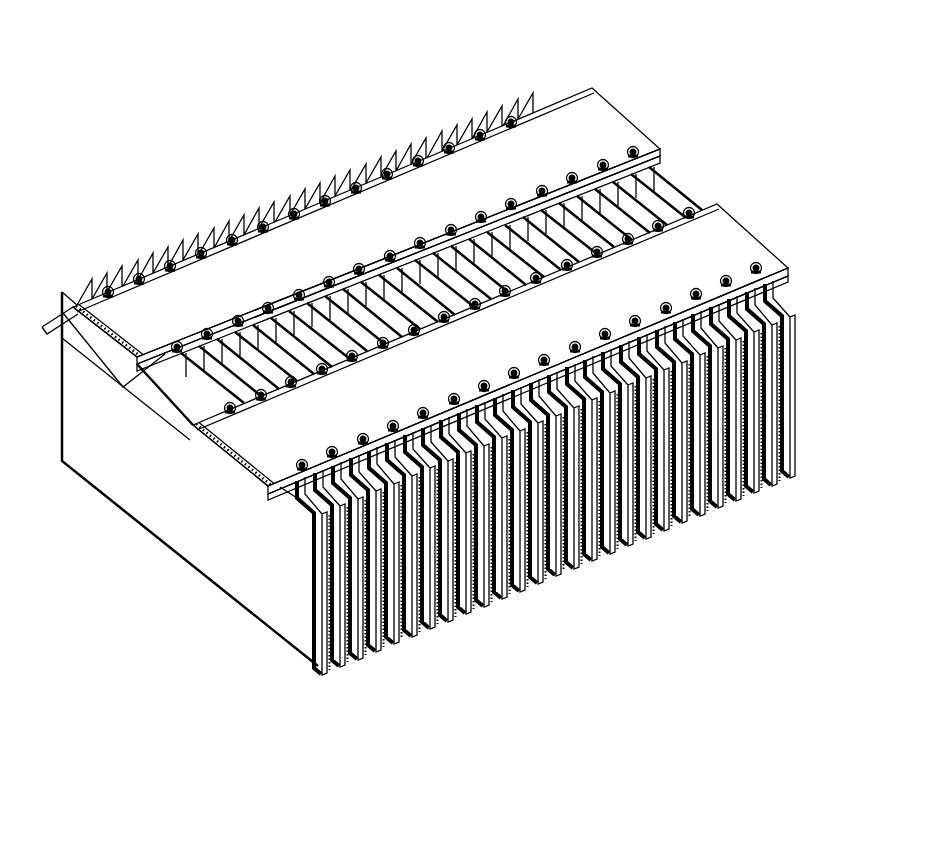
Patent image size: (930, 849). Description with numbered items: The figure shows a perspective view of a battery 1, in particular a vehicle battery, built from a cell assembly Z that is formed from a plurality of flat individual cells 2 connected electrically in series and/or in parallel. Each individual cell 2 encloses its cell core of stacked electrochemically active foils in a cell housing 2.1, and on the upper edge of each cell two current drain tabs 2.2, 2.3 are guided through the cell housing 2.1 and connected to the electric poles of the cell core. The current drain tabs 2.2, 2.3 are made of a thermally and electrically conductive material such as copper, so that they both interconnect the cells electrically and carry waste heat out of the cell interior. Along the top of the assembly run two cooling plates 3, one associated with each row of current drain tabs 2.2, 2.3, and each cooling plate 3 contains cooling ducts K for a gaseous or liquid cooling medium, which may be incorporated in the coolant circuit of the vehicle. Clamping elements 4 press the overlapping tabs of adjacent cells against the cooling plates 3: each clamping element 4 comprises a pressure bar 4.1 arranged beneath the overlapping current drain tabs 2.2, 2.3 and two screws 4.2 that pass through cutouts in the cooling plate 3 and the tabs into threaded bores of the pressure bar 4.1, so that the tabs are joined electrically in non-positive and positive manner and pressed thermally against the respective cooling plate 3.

The battery 1 is at (184, 68).
The individual cell 2 is at (120, 481).
The cell housing 2.1 is at (197, 540).
The current drain tab 2.2 is at (773, 277).
The current drain tab 2.3 is at (670, 153).
The cooling plate 3 is at (580, 107).
The clamping element 4 is at (102, 277).
The pressure bar 4.1 is at (297, 507).
The screw 4.2 is at (257, 213).
The cooling duct K is at (52, 333).
The cell assembly Z is at (553, 562).